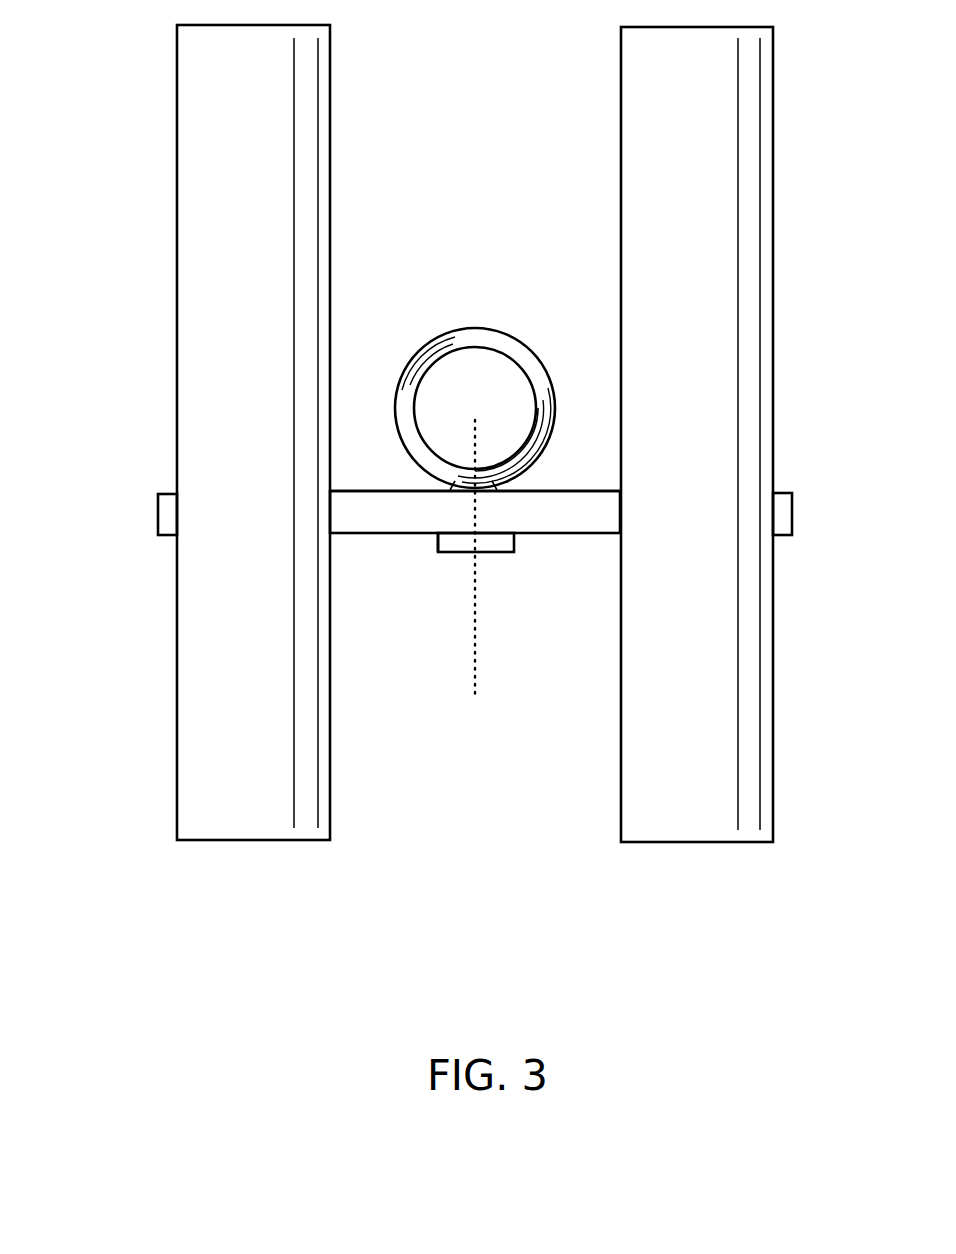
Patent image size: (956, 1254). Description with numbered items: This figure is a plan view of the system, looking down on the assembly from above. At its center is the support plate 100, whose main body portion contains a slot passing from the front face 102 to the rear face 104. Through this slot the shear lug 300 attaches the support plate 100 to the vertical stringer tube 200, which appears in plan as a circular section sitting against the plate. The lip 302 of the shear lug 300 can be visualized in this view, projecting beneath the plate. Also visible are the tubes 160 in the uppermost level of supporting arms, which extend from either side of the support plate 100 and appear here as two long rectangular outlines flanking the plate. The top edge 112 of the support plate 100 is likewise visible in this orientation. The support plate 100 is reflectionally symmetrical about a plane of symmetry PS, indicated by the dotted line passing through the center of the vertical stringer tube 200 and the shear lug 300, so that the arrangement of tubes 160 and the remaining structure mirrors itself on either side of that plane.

The support plate 100 is at (157, 497).
The front face 102 is at (405, 534).
The rear face 104 is at (378, 491).
The top edge 112 is at (598, 490).
The tubes 160 is at (177, 778).
The vertical stringer tube 200 is at (422, 350).
The shear lug 300 is at (505, 552).
The lip 302 is at (442, 552).
The plane of symmetry PS is at (473, 582).